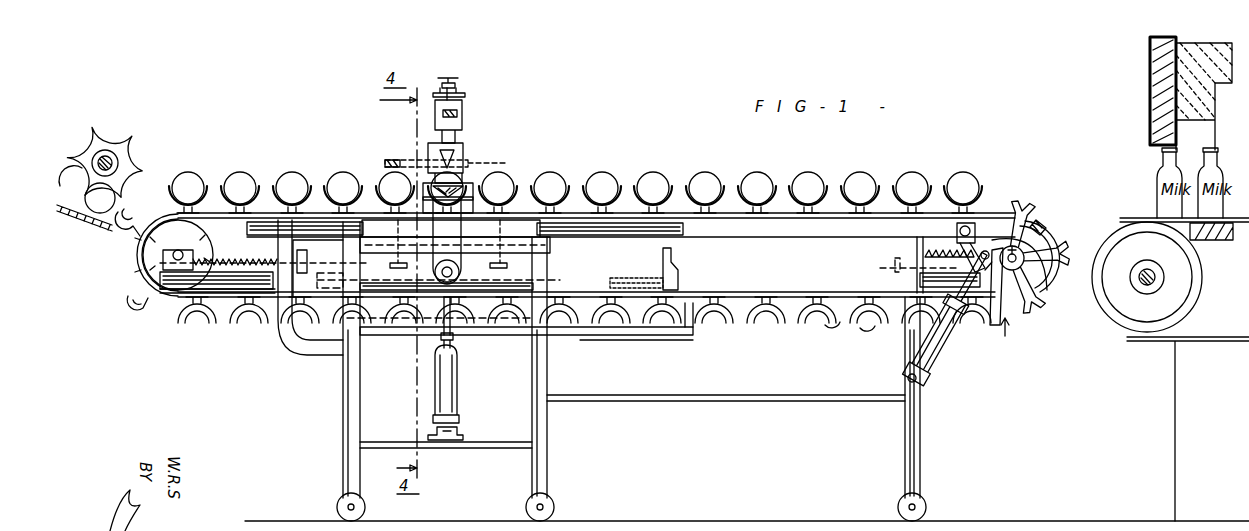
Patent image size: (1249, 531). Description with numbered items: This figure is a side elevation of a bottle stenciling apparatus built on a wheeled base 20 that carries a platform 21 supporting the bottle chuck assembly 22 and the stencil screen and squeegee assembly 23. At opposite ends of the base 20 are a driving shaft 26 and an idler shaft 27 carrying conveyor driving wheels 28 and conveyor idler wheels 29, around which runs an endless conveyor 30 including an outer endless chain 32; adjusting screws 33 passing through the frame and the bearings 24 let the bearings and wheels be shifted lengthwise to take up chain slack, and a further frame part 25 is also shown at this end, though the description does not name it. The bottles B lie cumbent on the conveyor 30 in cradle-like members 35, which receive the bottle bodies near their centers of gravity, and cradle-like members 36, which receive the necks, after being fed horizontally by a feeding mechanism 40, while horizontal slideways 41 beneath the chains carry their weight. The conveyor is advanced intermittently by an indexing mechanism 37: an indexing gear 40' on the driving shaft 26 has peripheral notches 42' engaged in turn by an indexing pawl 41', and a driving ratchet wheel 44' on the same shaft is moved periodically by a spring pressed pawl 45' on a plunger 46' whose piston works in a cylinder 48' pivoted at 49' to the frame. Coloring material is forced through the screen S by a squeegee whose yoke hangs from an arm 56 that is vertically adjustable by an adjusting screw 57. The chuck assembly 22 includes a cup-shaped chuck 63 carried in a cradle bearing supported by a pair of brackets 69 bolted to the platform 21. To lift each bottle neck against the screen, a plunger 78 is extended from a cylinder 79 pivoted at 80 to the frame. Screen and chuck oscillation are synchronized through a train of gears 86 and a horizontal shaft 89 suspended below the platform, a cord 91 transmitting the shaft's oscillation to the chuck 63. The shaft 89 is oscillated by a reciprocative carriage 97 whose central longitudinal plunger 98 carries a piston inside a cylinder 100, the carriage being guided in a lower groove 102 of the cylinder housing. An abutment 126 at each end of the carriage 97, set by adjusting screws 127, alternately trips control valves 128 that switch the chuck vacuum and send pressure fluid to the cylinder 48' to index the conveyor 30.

The wheeled base 20 is at (302, 348).
The platform 21 is at (540, 232).
The bottle chuck assembly 22 is at (475, 185).
The stencil screen and squeegee assembly 23 is at (463, 158).
The bearings 24 is at (160, 262).
The guide bar 25 is at (182, 284).
The driving shaft 26 is at (1015, 250).
The idler shaft 27 is at (178, 255).
The conveyor driving wheels 28 is at (1042, 291).
The conveyor idler wheels 29 is at (150, 252).
The endless conveyor 30 is at (316, 186).
The outer endless chain 32 is at (318, 268).
The adjusting screws 33 is at (240, 265).
The cradle-like members 35 is at (128, 296).
The cradle-like members 36 is at (135, 306).
The indexing mechanism 37 is at (1014, 337).
The feeding mechanism 40 is at (115, 179).
The indexing gear 40' is at (1049, 257).
The horizontal slideways 41 is at (467, 255).
The indexing pawl 41' is at (996, 218).
The peripheral notches 42' is at (1052, 256).
The driving ratchet wheel 44' is at (1055, 204).
The spring pressed pawl 45' is at (956, 225).
The plunger 46' is at (984, 306).
The cylinder 48' is at (949, 321).
The cylinder pivot 49' is at (934, 395).
The arm 56 is at (462, 118).
The adjusting screw 57 is at (455, 78).
The cup-shaped chuck 63 is at (425, 179).
The brackets 69 is at (448, 239).
The plunger 78 is at (460, 335).
The cylinder 79 is at (458, 386).
The cylinder pivot 80 is at (460, 433).
The train of gears 86 is at (466, 95).
The horizontal shaft 89 is at (435, 270).
The cord 91 is at (460, 277).
The reciprocative carriage 97 is at (648, 340).
The central longitudinal plunger 98 is at (578, 335).
The cylinder 100 is at (398, 335).
The lower groove 102 is at (458, 340).
The abutment 126 is at (672, 256).
The adjusting screws 127 is at (658, 278).
The control valves 128 is at (365, 262).
The bottles B is at (250, 180).
The screen S is at (381, 171).